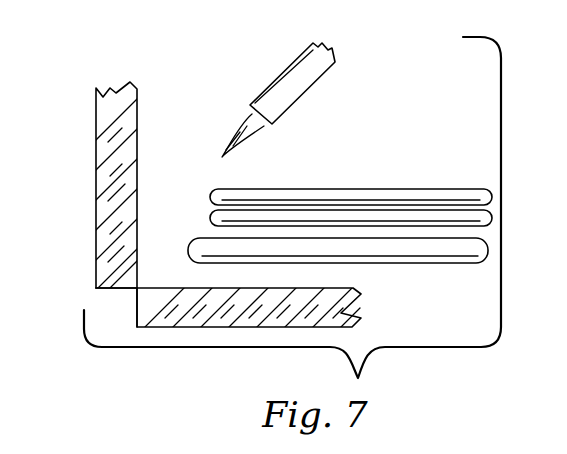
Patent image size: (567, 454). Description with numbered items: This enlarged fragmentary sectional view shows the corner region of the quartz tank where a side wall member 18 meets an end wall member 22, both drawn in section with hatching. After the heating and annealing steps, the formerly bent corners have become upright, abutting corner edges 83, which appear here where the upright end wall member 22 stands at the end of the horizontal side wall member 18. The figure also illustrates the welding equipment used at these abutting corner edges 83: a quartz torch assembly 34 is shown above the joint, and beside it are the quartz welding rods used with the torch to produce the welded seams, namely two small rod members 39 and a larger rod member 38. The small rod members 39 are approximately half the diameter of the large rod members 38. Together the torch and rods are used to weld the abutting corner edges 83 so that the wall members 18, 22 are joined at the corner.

The end wall member 22 is at (115, 105).
The side wall member 18 is at (362, 310).
The abutting corner edges 83 is at (138, 290).
The quartz torch assembly 34 is at (295, 82).
The small rod members 39 is at (320, 195).
The large rod members 38 is at (368, 252).